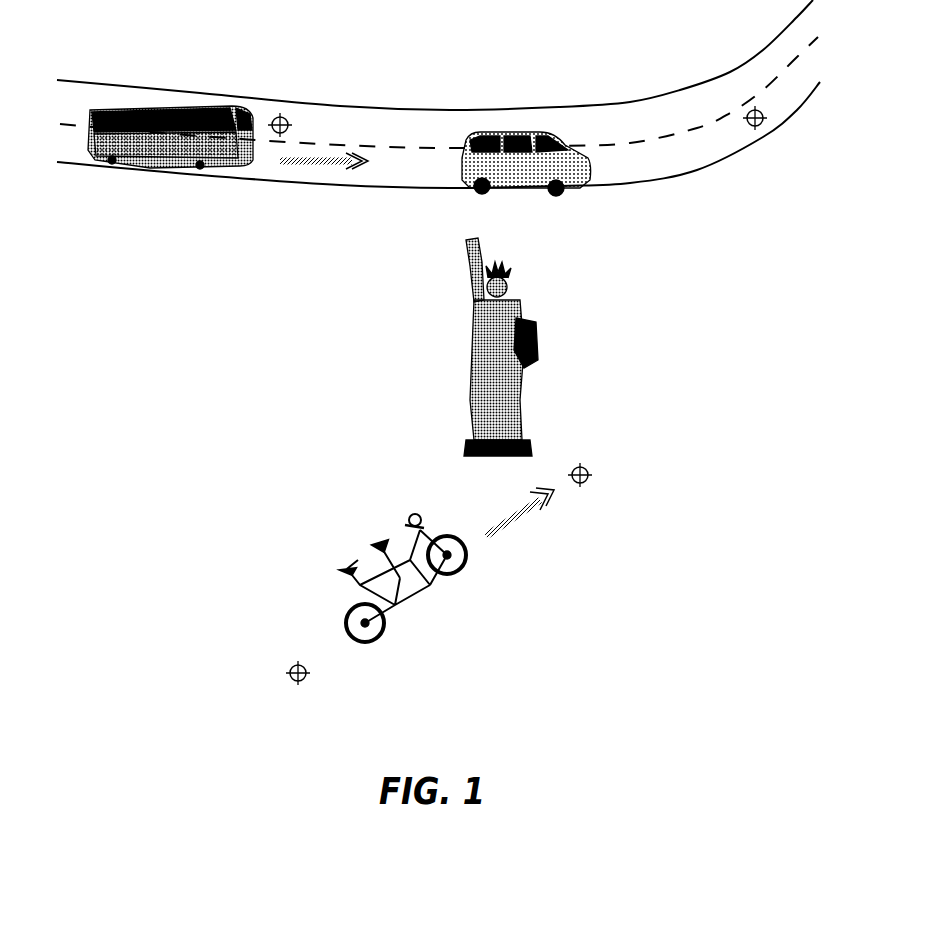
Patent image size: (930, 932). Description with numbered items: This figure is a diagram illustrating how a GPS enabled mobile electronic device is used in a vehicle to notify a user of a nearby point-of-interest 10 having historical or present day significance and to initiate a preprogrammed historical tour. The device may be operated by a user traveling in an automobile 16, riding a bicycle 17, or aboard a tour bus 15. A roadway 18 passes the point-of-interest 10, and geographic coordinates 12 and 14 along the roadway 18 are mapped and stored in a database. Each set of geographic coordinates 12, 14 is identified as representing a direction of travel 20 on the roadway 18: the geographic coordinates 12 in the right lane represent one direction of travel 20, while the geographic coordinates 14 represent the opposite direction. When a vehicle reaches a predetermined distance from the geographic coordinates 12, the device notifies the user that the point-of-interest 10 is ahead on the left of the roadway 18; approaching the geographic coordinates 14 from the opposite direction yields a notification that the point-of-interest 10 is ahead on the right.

The point-of-interest 10 is at (480, 348).
The geographic coordinates 12 is at (284, 118).
The geographic coordinates 14 is at (752, 110).
The tour bus 15 is at (165, 115).
The automobile 16 is at (522, 130).
The bicycle 17 is at (385, 540).
The roadway 18 is at (453, 122).
The direction of travel 20 is at (320, 167).